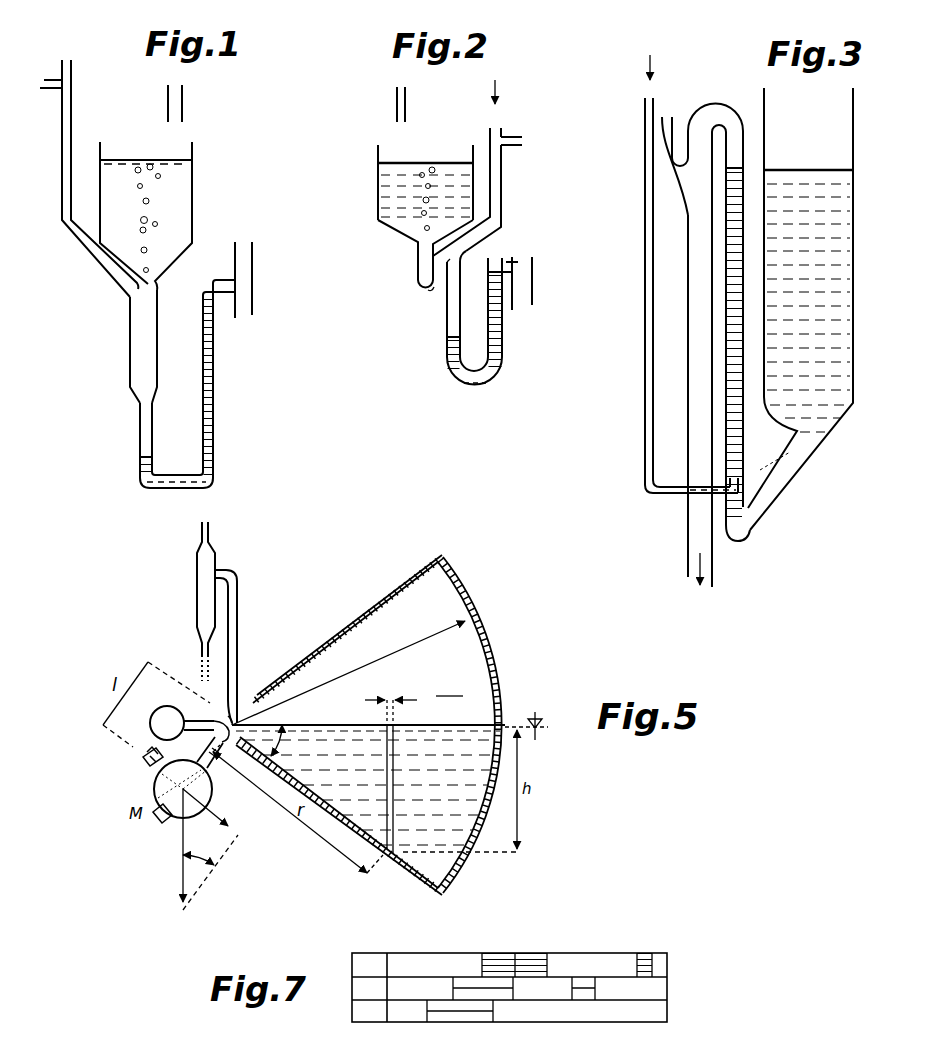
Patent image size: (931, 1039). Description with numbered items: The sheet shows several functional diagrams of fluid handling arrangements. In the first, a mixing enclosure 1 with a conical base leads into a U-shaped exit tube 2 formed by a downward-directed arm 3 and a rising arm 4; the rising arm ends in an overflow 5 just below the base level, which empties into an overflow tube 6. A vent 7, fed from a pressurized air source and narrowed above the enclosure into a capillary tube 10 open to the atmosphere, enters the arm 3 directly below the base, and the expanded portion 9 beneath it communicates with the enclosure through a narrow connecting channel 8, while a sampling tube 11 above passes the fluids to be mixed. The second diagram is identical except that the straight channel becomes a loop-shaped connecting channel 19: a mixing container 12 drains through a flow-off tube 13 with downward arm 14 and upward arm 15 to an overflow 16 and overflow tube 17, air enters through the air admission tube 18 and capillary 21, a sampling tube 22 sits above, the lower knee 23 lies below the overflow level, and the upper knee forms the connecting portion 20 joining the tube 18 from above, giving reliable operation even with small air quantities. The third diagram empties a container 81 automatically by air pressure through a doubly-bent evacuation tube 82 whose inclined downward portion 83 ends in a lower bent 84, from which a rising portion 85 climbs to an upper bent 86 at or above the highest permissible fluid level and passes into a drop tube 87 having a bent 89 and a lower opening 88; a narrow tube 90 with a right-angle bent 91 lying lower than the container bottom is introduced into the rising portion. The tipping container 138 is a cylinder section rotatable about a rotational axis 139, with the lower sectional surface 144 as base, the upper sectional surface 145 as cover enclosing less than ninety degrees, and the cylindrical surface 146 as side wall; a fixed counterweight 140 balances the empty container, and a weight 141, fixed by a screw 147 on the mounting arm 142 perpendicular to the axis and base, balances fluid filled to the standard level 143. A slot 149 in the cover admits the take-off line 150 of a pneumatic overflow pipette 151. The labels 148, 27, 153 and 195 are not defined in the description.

In FIG. 1, the mixing enclosure 1 is at (192, 168).
In FIG. 1, the exit tube 2 is at (200, 447).
In FIG. 1, the downward-directed arm 3 is at (140, 416).
In FIG. 1, the rising arm 4 is at (213, 394).
In FIG. 1, the overflow 5 is at (236, 281).
In FIG. 1, the overflow tube 6 is at (252, 315).
In FIG. 1, the vent 7 is at (71, 75).
In FIG. 1, the connecting channel 8 is at (158, 285).
In FIG. 1, the expanded portion 9 is at (131, 302).
In FIG. 1, the capillary tube 10 is at (45, 96).
In FIG. 1, the sampling tube 11 is at (182, 102).
In FIG. 2, the mixing container 12 is at (378, 184).
In FIG. 2, the exit or flow-off tube 13 is at (478, 378).
In FIG. 2, the downward directed arm 14 is at (447, 340).
In FIG. 2, the upward directed arm 15 is at (502, 346).
In FIG. 2, the overflow 16 is at (512, 260).
In FIG. 2, the overflow tube 17 is at (532, 305).
In FIG. 2, the air admission tube 18 is at (501, 194).
In FIG. 2, the loop-shaped connecting channel 19 is at (417, 284).
In FIG. 2, the connecting portion 20 is at (458, 254).
In FIG. 2, the capillary 21 is at (530, 141).
In FIG. 2, the sampling tube 22 is at (397, 102).
In FIG. 2, the lower knee 23 is at (428, 291).
In FIG. 3, the container 81 is at (853, 195).
In FIG. 3, the evacuation tube 82 is at (783, 462).
In FIG. 3, the downward directed portion 83 is at (770, 510).
In FIG. 3, the lower bent 84 is at (738, 542).
In FIG. 3, the rising portion 85 is at (743, 284).
In FIG. 3, the upper bent 86 is at (725, 109).
In FIG. 3, the drop tube 87 is at (688, 222).
In FIG. 3, the lower opening 88 is at (688, 578).
In FIG. 3, the bent 89 is at (672, 120).
In FIG. 3, the narrow tube 90 is at (645, 310).
In FIG. 3, the right-angle bent 91 is at (732, 480).
In FIG. 5, the container 138 is at (382, 728).
In FIG. 5, the rotational axis 139 is at (224, 718).
In FIG. 5, the counterweight 140 is at (169, 707).
In FIG. 5, the weight 141 is at (172, 822).
In FIG. 5, the mounting arm 142 is at (212, 764).
In FIG. 5, the standard level 143 is at (550, 728).
In FIG. 5, the lower sectional surface 144 is at (394, 866).
In FIG. 5, the upper sectional surface 145 is at (391, 600).
In FIG. 5, the cylindrical surface 146 is at (497, 656).
In FIG. 5, the screw 147 is at (143, 768).
In FIG. 5, the tube 148 is at (213, 734).
In FIG. 5, the slot 149 is at (246, 708).
In FIG. 5, the take-off line 150 is at (237, 607).
In FIG. 5, the pneumatic overflow pipette 151 is at (197, 596).
In FIG. 7, the row 27 is at (506, 965).
In FIG. 7, the row 153 is at (476, 988).
In FIG. 7, the row 195 is at (425, 1011).